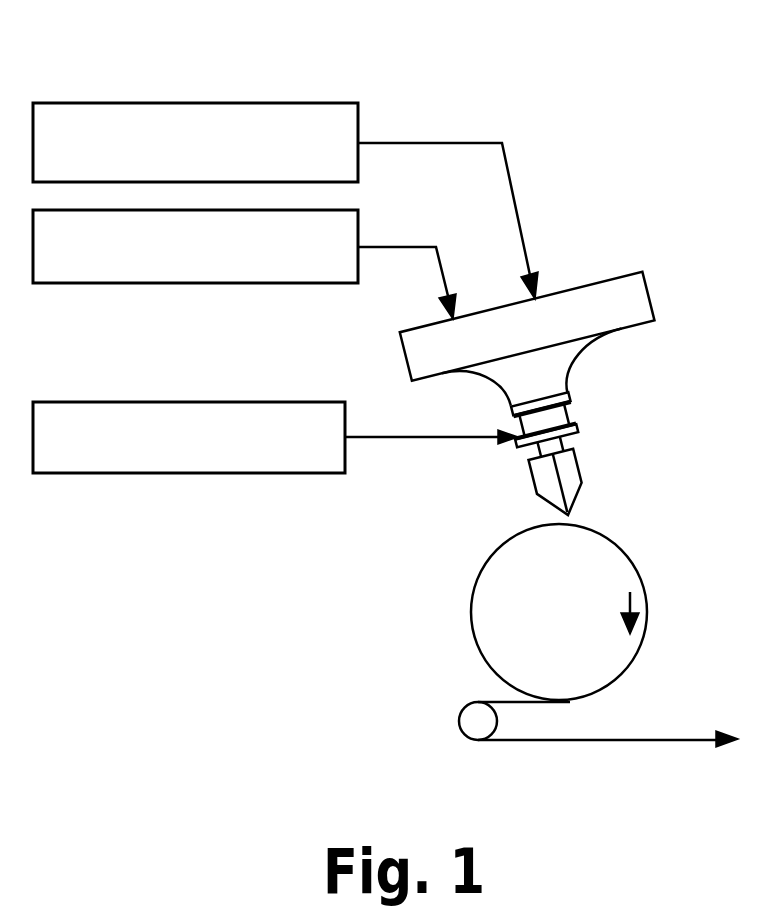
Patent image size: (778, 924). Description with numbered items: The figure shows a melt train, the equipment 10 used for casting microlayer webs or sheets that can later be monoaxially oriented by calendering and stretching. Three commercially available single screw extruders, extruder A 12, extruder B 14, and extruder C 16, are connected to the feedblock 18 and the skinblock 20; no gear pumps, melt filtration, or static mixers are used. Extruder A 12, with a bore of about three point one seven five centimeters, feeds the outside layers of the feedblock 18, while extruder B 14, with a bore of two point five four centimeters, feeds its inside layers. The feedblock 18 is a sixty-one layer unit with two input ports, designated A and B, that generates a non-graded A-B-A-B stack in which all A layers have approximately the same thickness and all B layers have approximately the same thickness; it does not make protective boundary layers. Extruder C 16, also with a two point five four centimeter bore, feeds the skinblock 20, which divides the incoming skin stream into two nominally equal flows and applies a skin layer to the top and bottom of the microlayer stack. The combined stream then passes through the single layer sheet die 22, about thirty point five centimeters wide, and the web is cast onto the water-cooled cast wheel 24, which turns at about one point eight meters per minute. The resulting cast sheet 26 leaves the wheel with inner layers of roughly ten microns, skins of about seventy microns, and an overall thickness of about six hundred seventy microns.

The equipment 10 is at (597, 99).
The extruder A 12 is at (360, 117).
The extruder B 14 is at (360, 232).
The extruder C 16 is at (345, 422).
The feedblock 18 is at (627, 305).
The skinblock 20 is at (543, 422).
The sheet die 22 is at (568, 468).
The cast wheel 24 is at (603, 570).
The cast sheet 26 is at (556, 741).